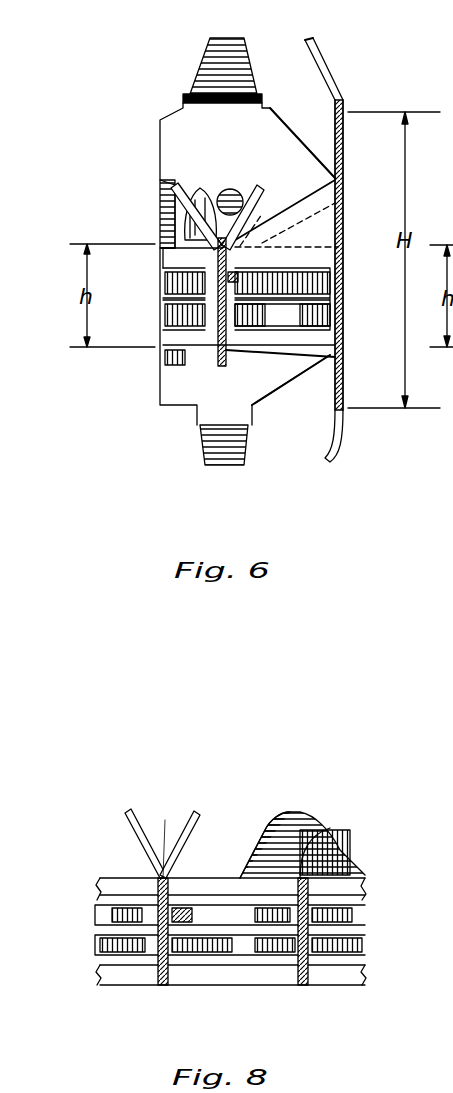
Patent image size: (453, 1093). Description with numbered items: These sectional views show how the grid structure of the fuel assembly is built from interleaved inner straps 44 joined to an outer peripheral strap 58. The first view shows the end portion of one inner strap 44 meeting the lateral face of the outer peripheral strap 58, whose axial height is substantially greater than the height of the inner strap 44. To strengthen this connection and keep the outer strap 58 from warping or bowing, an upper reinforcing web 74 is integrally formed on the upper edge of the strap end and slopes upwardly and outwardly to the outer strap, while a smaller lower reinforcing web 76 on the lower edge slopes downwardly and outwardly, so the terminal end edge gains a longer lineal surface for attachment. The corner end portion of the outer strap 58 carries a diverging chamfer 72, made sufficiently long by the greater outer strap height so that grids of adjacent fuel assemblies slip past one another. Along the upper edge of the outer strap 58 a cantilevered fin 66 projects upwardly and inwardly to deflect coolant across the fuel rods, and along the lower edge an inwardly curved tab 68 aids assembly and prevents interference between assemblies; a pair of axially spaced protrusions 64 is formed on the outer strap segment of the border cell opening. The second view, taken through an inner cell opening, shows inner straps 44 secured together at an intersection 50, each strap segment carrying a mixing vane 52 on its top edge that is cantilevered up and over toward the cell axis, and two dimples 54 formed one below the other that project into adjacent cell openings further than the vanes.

In FIG. 6, the inner straps 44 is at (155, 380).
In FIG. 8, the inner straps 44 is at (318, 998).
In FIG. 8, the intersection 50 is at (165, 825).
In FIG. 6, the mixing vane 52 is at (213, 193).
In FIG. 8, the mixing vane 52 is at (137, 812).
In FIG. 6, the dimples 54 is at (247, 299).
In FIG. 8, the dimples 54 is at (95, 920).
In FIG. 6, the outer peripheral strap 58 is at (365, 138).
In FIG. 6, the protrusions 64 is at (343, 205).
In FIG. 6, the cantilevered fins 66 is at (222, 40).
In FIG. 6, the inwardly curved tabs 68 is at (250, 438).
In FIG. 6, the chamfers 72 is at (268, 122).
In FIG. 6, the upper reinforcing web 74 is at (282, 214).
In FIG. 6, the lower reinforcing web 76 is at (280, 343).